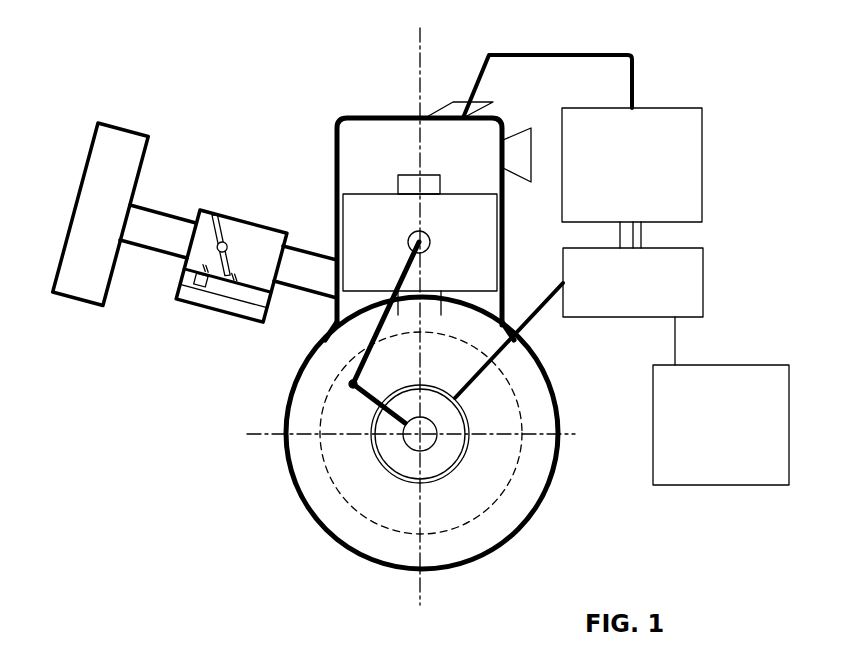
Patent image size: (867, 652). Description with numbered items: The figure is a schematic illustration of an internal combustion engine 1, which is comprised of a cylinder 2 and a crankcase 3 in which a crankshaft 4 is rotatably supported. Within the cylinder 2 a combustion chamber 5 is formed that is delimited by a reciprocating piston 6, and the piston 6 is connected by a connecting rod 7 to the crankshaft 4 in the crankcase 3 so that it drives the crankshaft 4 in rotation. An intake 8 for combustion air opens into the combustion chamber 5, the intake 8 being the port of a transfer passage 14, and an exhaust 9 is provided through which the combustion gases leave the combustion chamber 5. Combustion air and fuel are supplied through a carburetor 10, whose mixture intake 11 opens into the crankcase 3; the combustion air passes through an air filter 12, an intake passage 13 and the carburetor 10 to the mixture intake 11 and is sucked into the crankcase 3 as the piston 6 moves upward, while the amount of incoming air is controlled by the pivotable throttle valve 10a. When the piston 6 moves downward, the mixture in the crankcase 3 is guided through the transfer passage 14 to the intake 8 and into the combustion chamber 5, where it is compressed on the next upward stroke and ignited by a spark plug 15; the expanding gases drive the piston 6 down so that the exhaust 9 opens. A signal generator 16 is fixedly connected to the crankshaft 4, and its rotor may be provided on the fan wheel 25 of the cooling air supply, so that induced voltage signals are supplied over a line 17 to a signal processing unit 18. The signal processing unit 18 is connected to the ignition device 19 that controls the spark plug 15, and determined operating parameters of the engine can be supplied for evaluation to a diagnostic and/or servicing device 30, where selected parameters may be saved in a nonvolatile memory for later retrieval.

The internal combustion engine 1 is at (293, 153).
The cylinder 2 is at (352, 117).
The crankcase 3 is at (285, 457).
The crankshaft 4 is at (430, 440).
The combustion chamber 5 is at (398, 140).
The piston 6 is at (420, 242).
The connecting rod 7 is at (377, 325).
The intake 8 is at (413, 185).
The exhaust 9 is at (503, 140).
The carburetor 10 is at (232, 240).
The throttle valve 10a is at (220, 222).
The mixture intake 11 is at (337, 280).
The air filter 12 is at (92, 200).
The intake passage 13 is at (160, 228).
The transfer passage 14 is at (433, 306).
The spark plug 15 is at (462, 110).
The signal generator 16 is at (395, 455).
The line 17 is at (527, 328).
The signal processing unit 18 is at (633, 306).
The ignition device 19 is at (632, 178).
The fan wheel 25 is at (367, 512).
The diagnostic and/or servicing device 30 is at (721, 425).